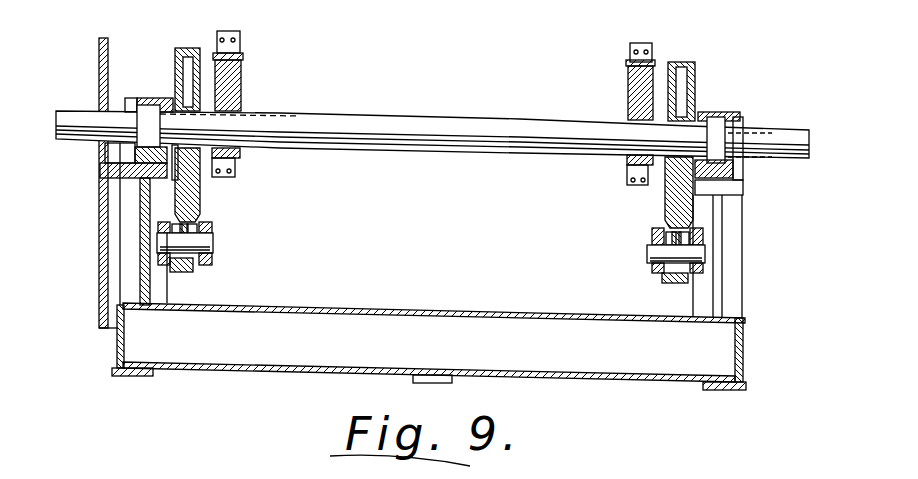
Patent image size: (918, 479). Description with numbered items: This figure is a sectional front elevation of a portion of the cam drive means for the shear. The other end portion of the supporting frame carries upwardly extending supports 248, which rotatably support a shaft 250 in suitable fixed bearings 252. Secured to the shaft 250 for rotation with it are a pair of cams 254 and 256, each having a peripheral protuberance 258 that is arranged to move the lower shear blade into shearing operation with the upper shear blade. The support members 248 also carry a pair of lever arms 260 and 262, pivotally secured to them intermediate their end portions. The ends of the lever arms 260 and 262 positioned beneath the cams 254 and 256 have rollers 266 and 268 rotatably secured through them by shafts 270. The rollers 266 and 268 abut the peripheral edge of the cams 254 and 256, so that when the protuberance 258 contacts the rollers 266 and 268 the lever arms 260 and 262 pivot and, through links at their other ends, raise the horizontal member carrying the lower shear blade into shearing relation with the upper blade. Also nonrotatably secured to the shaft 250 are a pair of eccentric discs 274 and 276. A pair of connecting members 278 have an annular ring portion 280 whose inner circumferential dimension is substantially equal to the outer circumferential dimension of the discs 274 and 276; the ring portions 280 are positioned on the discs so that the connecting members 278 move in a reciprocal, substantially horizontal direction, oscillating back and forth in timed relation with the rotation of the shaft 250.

The upwardly extending supports 248 is at (158, 287).
The shaft 250 is at (790, 135).
The fixed bearings 252 is at (147, 98).
The cam 254 is at (687, 64).
The cam 256 is at (192, 48).
The peripheral protuberance 258 is at (194, 212).
The lever arm 260 is at (675, 268).
The lever arm 262 is at (163, 231).
The roller 266 is at (672, 232).
The roller 268 is at (188, 224).
The shaft 270 is at (210, 243).
The eccentric disc 274 is at (636, 88).
The eccentric disc 276 is at (230, 88).
The connecting member 278 is at (248, 46).
The annular ring portion 280 is at (244, 58).